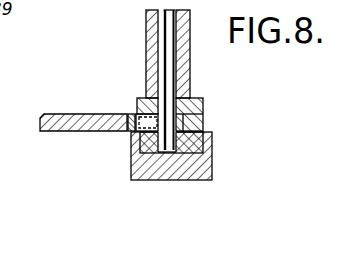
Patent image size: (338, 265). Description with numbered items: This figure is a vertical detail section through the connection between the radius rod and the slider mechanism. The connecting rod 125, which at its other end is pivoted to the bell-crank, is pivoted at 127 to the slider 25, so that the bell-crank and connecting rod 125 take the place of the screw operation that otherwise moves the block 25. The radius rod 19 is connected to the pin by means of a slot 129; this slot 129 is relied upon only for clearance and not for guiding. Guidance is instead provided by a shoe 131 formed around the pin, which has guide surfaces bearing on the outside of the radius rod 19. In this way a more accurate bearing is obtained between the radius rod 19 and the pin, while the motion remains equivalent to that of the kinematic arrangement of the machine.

The radius rod 19 is at (61, 130).
The slider 25 is at (200, 142).
The connecting rod 125 is at (146, 37).
The pivot 127 is at (171, 53).
The slot 129 is at (141, 119).
The shoe 131 is at (203, 98).